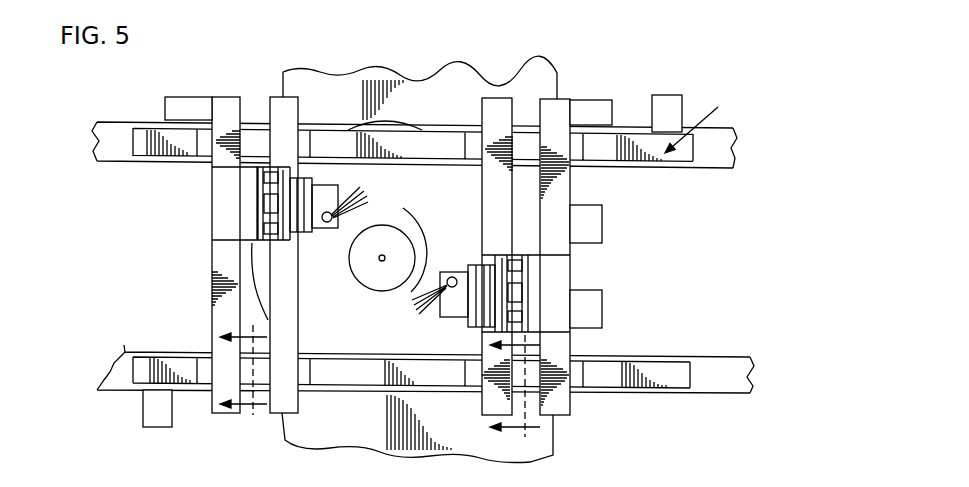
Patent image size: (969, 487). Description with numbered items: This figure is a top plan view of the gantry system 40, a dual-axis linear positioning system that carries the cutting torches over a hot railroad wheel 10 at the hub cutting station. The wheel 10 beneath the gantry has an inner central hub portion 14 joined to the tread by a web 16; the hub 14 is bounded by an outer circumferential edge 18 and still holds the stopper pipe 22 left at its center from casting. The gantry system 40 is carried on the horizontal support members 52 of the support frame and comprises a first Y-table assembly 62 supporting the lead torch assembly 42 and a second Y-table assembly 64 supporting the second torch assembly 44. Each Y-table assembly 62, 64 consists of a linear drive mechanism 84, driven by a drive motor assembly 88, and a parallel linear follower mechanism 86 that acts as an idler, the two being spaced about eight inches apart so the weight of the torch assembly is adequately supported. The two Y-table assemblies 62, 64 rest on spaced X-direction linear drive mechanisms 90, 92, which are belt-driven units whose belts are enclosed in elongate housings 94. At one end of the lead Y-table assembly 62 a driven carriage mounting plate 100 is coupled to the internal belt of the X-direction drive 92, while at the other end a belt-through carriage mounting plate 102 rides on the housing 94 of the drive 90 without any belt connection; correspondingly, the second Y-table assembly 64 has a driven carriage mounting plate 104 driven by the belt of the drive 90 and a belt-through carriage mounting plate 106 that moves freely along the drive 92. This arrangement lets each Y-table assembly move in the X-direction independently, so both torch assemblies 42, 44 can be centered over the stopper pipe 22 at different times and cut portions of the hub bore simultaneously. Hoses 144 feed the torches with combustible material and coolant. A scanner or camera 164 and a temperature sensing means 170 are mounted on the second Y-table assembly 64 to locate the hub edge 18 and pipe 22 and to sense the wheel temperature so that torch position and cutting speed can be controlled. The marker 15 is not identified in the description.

The railroad wheel 10 is at (262, 298).
The inner central hub portion 14 is at (377, 278).
The section line 15 is at (260, 386).
The web 16 is at (532, 397).
The outer circumferential edge 18 is at (398, 290).
The stopper pipe 22 is at (379, 262).
The gantry system 40 is at (704, 118).
The lead torch assembly 42 is at (329, 229).
The second torch assembly 44 is at (452, 270).
The horizontal support members 52 is at (735, 148).
The first Y-table assembly 62 is at (224, 254).
The second Y-table assembly 64 is at (500, 178).
The linear drive mechanism 84 is at (572, 188).
The linear follower mechanism 86 is at (282, 310).
The drive motor assembly 88 is at (186, 112).
The X-direction linear drive mechanism 90 is at (137, 142).
The X-direction linear drive mechanism 92 is at (672, 375).
The elongate housing 94 is at (647, 160).
The driven carriage mounting plate 100 is at (302, 372).
The belt-through carriage mounting plate 102 is at (305, 142).
The driven carriage mounting plate 104 is at (472, 142).
The belt-through carriage mounting plate 106 is at (478, 380).
The hoses 144 is at (396, 206).
The scanner or camera 164 is at (583, 310).
The temperature sensing means 170 is at (583, 232).